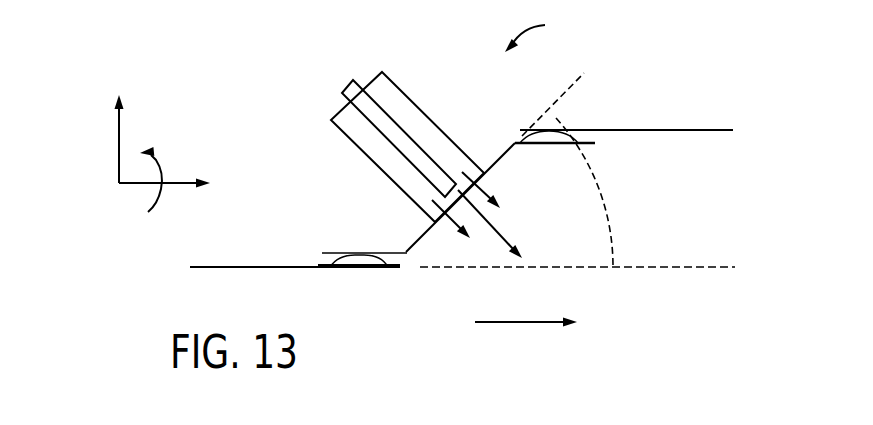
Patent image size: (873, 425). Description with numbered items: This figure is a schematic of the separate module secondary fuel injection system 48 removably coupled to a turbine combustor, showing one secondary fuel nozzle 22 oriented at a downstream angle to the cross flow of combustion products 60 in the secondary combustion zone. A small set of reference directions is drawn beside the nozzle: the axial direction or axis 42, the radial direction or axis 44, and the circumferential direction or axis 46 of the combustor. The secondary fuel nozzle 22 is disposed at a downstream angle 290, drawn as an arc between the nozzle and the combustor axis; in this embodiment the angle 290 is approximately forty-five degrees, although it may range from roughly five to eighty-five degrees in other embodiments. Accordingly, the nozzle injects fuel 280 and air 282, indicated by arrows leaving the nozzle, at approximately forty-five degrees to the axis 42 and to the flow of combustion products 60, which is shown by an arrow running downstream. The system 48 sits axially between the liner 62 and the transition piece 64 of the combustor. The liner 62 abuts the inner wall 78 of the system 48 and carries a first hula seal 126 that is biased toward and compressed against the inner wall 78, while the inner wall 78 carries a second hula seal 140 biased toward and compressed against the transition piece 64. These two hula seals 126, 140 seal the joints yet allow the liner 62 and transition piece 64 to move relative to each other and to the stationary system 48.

The secondary fuel nozzle 22 is at (436, 125).
The axial direction or axis 42 is at (138, 185).
The radial direction or axis 44 is at (118, 146).
The circumferential direction or axis 46 is at (160, 160).
The separate module secondary fuel injection system 48 is at (538, 35).
The combustion products 60 is at (522, 323).
The liner 62 is at (256, 268).
The transition piece 64 is at (682, 129).
The inner wall 78 is at (408, 251).
The first hula seal 126 is at (382, 261).
The second hula seal 140 is at (597, 143).
The fuel 280 is at (505, 242).
The air 282 is at (488, 195).
The downstream angle 290 is at (608, 214).